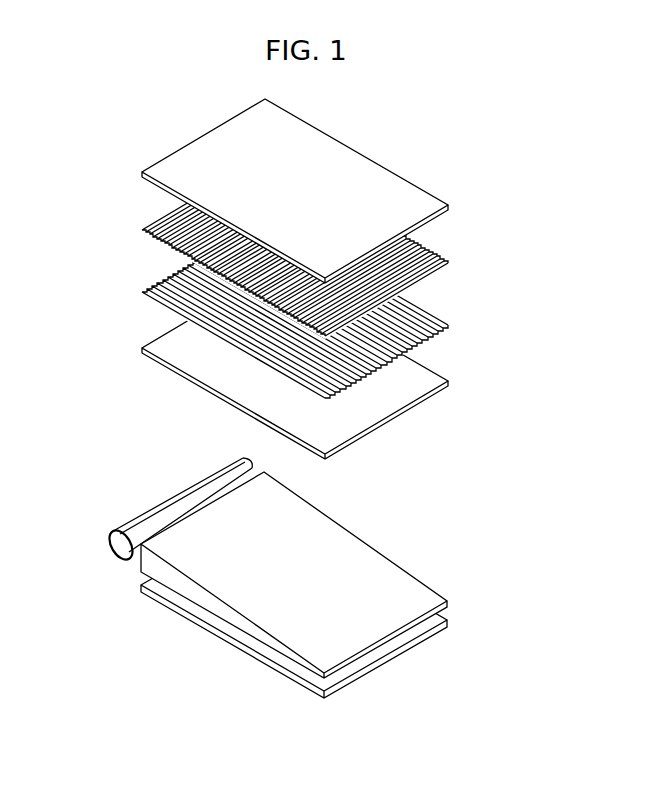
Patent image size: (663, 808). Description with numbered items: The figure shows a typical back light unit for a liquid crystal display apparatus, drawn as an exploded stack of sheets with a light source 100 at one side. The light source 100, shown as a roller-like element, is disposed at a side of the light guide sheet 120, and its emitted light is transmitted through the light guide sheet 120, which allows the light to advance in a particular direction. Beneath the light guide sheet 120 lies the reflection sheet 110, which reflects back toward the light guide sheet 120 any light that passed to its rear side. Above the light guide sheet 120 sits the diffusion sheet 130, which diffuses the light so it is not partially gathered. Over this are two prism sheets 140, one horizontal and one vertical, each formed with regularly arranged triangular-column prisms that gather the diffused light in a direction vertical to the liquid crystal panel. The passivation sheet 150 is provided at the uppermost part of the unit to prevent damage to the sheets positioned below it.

The light source 100 is at (117, 542).
The reflection sheet 110 is at (427, 630).
The light guide sheet 120 is at (407, 582).
The diffusion sheet 130 is at (448, 381).
The prism sheet 140 is at (448, 267).
The passivation sheet 150 is at (448, 205).